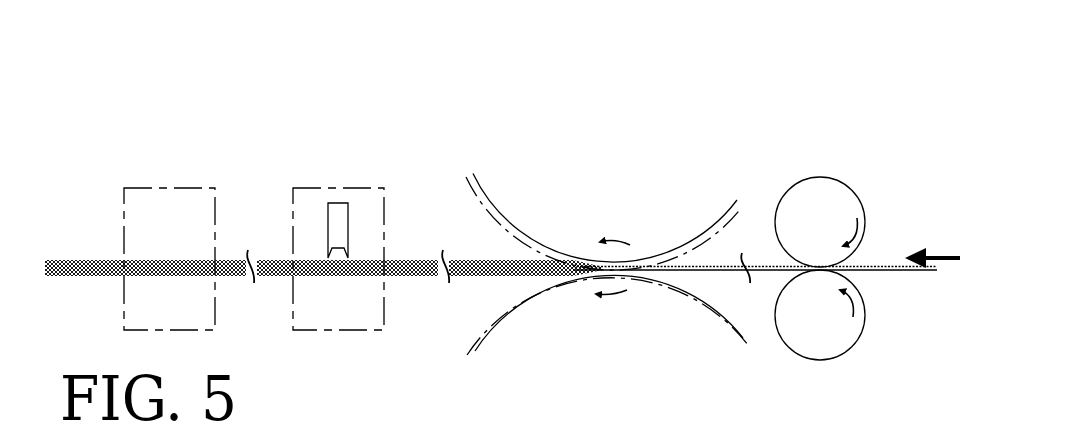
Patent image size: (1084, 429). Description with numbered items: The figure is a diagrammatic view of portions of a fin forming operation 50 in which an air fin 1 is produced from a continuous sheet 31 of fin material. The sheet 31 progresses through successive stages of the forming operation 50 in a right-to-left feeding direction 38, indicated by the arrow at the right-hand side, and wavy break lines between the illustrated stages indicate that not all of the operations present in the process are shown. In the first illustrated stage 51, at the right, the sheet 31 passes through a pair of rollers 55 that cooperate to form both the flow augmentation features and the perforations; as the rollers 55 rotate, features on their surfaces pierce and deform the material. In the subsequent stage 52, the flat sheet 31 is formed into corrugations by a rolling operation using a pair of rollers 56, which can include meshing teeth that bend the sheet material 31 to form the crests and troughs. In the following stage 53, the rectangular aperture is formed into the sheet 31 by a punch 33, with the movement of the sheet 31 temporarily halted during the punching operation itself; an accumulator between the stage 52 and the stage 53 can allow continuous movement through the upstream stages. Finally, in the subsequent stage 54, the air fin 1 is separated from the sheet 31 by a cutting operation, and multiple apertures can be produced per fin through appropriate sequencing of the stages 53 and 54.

The air fin 1 is at (80, 258).
The continuous sheet 31 is at (872, 267).
The punch 33 is at (342, 222).
The feeding direction 38 is at (950, 263).
The fin forming operation 50 is at (682, 118).
The first illustrated stage 51 is at (820, 158).
The subsequent stage 52 is at (555, 165).
The following stage 53 is at (303, 188).
The subsequent stage 54 is at (141, 188).
The pair of rollers 55 is at (853, 340).
The pair of rollers 56 is at (490, 333).